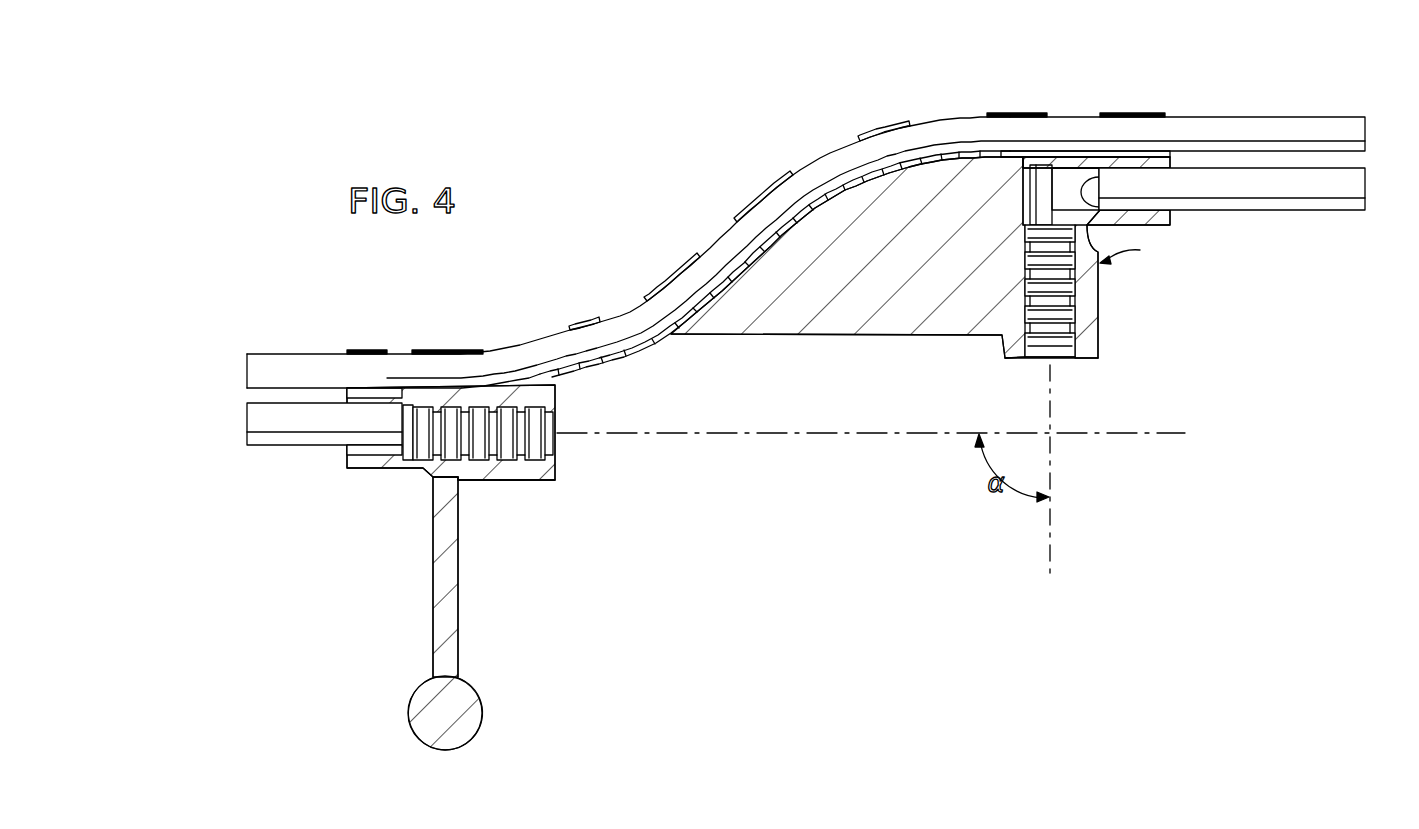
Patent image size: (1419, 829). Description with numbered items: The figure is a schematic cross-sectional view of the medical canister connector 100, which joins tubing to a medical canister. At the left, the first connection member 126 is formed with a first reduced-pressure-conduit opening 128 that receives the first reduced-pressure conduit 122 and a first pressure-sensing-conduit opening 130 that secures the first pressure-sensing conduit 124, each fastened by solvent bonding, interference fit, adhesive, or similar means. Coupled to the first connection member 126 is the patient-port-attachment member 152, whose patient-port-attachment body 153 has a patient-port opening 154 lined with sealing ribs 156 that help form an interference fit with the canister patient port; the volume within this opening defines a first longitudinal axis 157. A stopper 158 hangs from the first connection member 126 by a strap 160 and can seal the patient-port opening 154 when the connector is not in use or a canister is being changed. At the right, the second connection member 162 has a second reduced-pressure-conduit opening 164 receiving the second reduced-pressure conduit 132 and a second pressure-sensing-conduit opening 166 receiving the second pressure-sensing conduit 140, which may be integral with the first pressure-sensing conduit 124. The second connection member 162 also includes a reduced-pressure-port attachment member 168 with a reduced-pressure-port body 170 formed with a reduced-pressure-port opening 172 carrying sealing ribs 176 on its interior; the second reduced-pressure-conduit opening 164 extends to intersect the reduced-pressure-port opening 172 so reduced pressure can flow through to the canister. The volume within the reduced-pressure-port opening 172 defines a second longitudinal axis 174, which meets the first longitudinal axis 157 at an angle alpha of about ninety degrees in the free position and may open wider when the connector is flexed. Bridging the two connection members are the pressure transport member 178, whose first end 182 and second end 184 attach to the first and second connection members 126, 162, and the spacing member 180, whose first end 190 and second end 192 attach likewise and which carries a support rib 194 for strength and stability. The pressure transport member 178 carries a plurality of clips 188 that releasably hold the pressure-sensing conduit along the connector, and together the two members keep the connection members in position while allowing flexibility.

The medical canister connector 100 is at (1140, 248).
The first reduced-pressure conduit 122 is at (260, 447).
The first pressure-sensing conduit 124 is at (262, 351).
The first connection member 126 is at (403, 470).
The first reduced-pressure-conduit opening 128 is at (347, 453).
The first pressure-sensing-conduit opening 130 is at (350, 387).
The second reduced-pressure conduit 132 is at (1313, 212).
The second pressure-sensing conduit 140 is at (1313, 118).
The patient-port-attachment member 152 is at (520, 485).
The patient-port-attachment body 153 is at (482, 485).
The patient-port opening 154 is at (555, 423).
The sealing ribs 156 is at (525, 448).
The first longitudinal axis 157 is at (1163, 430).
The stopper 158 is at (483, 712).
The strap 160 is at (459, 620).
The second connection member 162 is at (1100, 311).
The second reduced-pressure-conduit opening 164 is at (1170, 218).
The second pressure-sensing-conduit opening 166 is at (1173, 116).
The reduced-pressure-port attachment member 168 is at (1100, 345).
The reduced-pressure-port body 170 is at (1100, 289).
The reduced-pressure-port opening 172 is at (1066, 360).
The second longitudinal axis 174 is at (1053, 566).
The sealing ribs 176 is at (1040, 340).
The pressure transport member 178 is at (760, 195).
The spacing member 180 is at (660, 349).
The first end 182 is at (443, 351).
The second end 184 is at (1137, 114).
The clips 188 is at (366, 350).
The first end 190 is at (598, 374).
The second end 192 is at (1067, 157).
The support rib 194 is at (888, 272).